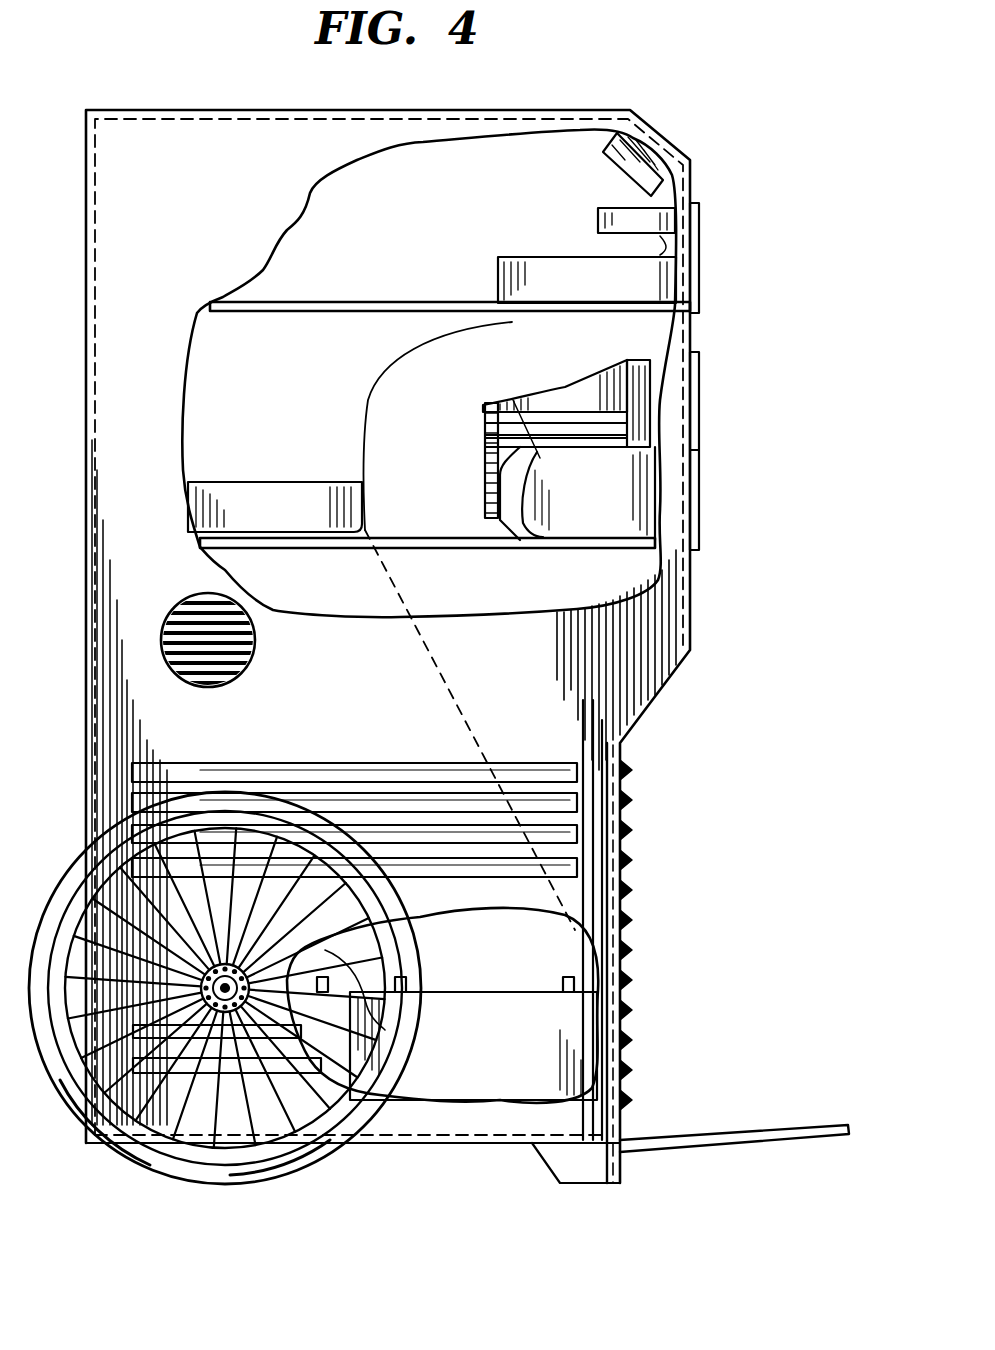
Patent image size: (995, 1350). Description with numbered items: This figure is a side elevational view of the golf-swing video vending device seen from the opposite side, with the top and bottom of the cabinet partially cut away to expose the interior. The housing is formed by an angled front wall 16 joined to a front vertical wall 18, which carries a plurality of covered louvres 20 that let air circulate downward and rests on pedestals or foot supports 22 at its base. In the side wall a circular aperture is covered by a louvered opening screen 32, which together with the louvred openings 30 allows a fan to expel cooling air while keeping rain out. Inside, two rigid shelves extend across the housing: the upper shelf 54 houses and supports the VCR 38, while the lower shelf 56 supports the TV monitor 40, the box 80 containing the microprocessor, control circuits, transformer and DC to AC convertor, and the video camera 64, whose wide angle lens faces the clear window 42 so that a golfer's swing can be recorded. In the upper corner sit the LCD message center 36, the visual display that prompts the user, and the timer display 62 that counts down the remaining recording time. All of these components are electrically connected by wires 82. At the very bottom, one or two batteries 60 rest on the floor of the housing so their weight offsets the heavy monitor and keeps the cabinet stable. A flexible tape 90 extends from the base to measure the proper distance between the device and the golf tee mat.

The angled front wall 16 is at (660, 686).
The front vertical wall 18 is at (625, 1095).
The covered louvres 20 is at (630, 830).
The pedestals or foot supports 22 is at (625, 1183).
The louvred openings 30 is at (462, 763).
The louvered opening screen 32 is at (243, 667).
The LCD message center 36 is at (645, 158).
The VCR 38 is at (533, 257).
The TV monitor 40 is at (566, 385).
The clear window 42 is at (700, 470).
The shelf 54 is at (413, 301).
The shelf 56 is at (468, 538).
The battery 60 is at (565, 992).
The timer display 62 is at (700, 220).
The video camera 64 is at (484, 400).
The box 80 is at (315, 480).
The wires 82 is at (615, 208).
The flexible tape 90 is at (760, 1130).